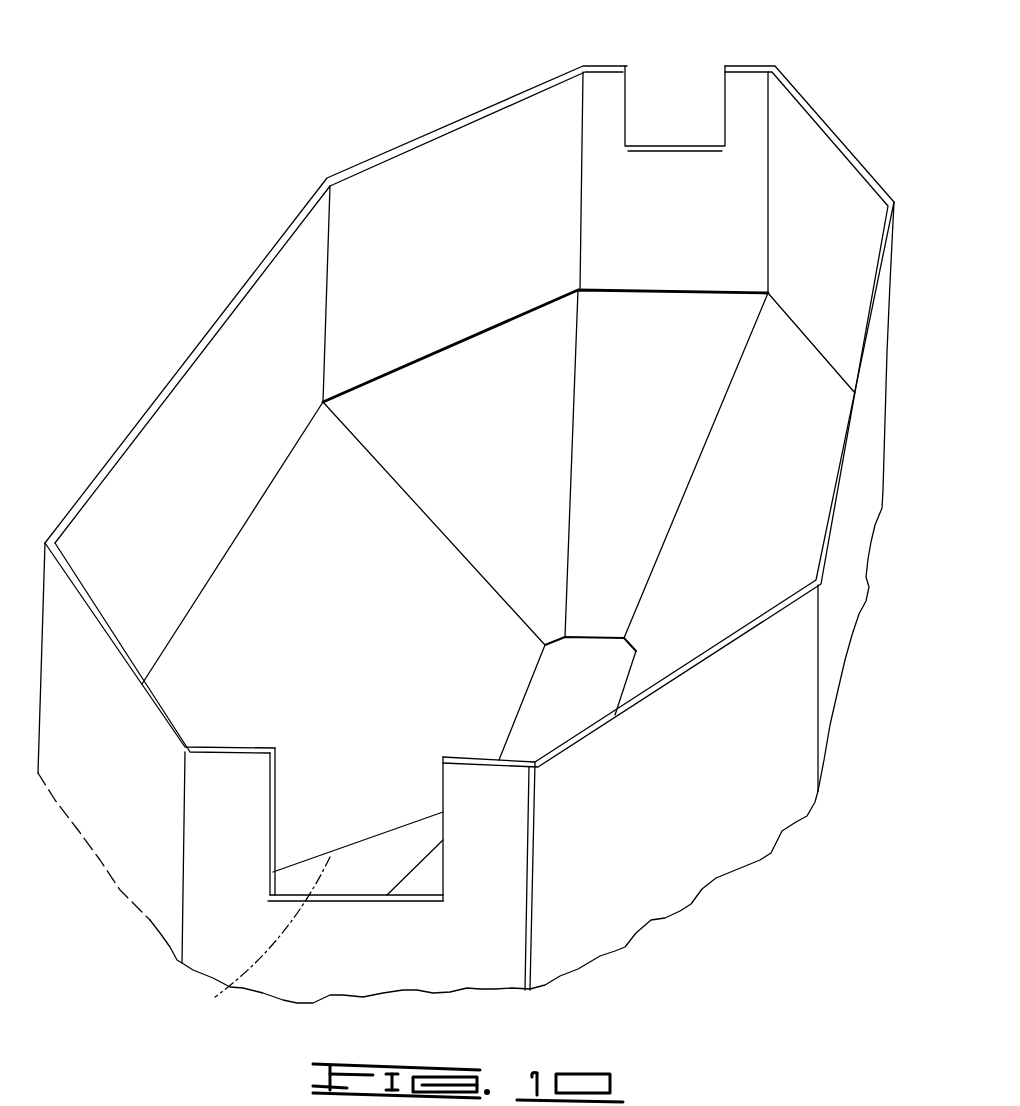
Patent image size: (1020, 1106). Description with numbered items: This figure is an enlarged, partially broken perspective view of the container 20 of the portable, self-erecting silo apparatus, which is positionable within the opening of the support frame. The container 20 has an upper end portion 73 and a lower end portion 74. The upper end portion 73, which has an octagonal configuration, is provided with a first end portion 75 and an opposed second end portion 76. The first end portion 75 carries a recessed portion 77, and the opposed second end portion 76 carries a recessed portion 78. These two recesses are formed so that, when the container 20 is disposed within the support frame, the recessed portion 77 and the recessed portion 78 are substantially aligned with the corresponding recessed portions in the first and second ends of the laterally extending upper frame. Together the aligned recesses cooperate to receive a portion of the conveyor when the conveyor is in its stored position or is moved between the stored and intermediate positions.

The container 20 is at (230, 305).
The upper end portion 73 is at (675, 778).
The lower end portion 74 is at (490, 701).
The first end portion 75 is at (488, 906).
The opposed second end portion 76 is at (741, 216).
The recessed portion 77 is at (197, 999).
The recessed portion 78 is at (697, 117).